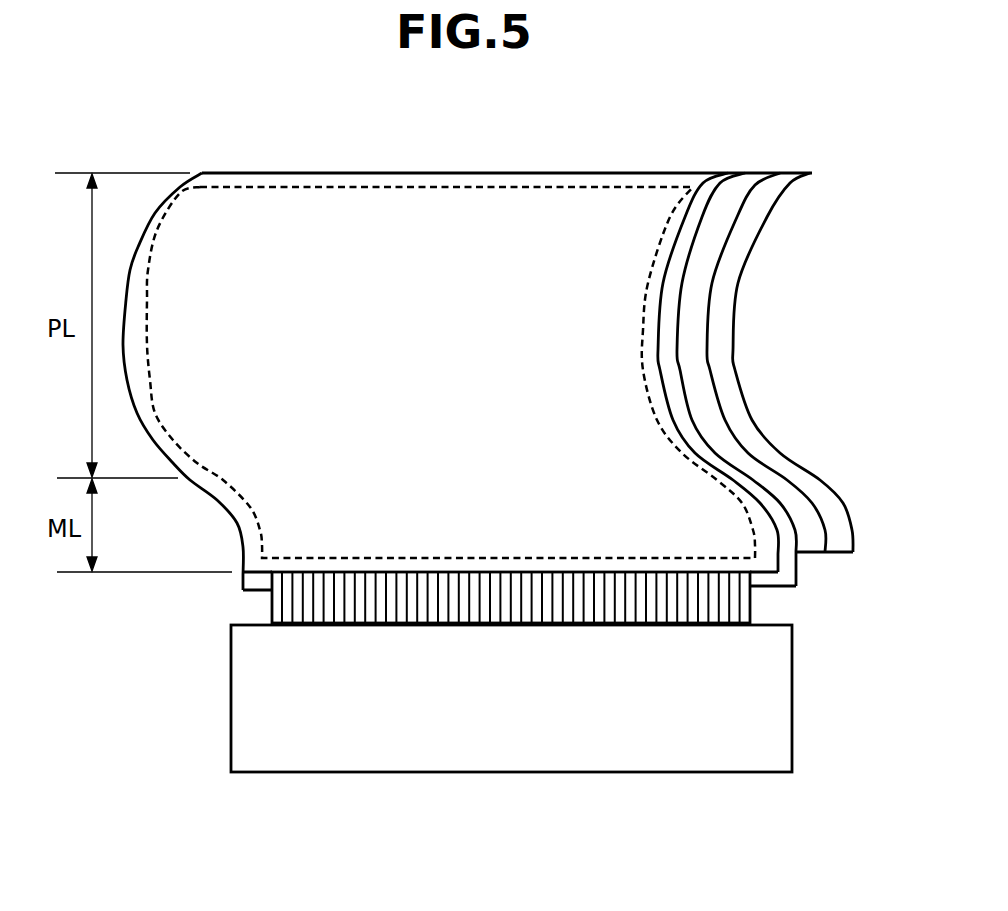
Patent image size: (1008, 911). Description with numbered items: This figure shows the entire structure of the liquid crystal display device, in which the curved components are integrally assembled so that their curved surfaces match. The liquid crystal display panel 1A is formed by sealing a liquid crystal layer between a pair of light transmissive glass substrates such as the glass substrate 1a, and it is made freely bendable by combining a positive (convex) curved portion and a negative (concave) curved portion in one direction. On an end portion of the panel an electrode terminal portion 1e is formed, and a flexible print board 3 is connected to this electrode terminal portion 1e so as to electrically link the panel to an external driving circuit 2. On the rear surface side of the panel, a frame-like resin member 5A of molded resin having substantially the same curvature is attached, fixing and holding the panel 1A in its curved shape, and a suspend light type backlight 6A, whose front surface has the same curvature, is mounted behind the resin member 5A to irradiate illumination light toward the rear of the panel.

The liquid crystal display panel 1A is at (321, 174).
The light transmissive glass substrate 1a is at (528, 198).
The electrode terminal portion 1e is at (252, 580).
The frame-like resin member 5A is at (697, 277).
The suspend light type backlight 6A is at (808, 491).
The flexible print board 3 is at (730, 600).
The external driving circuit 2 is at (775, 690).